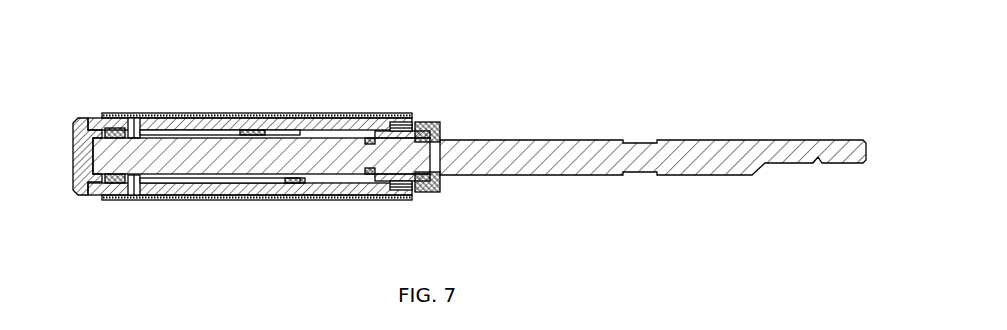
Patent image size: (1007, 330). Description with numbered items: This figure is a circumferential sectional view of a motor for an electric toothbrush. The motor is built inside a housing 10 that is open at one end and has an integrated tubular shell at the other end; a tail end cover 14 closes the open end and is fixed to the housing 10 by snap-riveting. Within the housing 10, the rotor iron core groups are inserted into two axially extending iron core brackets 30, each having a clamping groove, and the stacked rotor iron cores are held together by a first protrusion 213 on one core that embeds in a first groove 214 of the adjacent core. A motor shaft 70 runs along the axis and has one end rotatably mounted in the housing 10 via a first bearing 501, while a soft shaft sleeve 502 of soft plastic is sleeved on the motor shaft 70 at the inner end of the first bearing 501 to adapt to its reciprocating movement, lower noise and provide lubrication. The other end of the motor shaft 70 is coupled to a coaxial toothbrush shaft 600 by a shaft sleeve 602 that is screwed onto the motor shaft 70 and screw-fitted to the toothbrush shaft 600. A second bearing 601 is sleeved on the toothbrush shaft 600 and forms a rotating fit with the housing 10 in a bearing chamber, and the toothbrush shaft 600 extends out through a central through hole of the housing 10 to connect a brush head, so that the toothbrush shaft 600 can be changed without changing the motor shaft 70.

The tail end cover 14 is at (64, 140).
The first bearing 501 is at (108, 126).
The soft shaft sleeve 502 is at (138, 125).
The housing 10 is at (178, 117).
The first groove 214 is at (243, 128).
The first protrusion 213 is at (268, 130).
The motor shaft 70 is at (338, 158).
The shaft sleeve 602 is at (380, 133).
The second bearing 601 is at (430, 127).
The toothbrush shaft 600 is at (514, 150).
The iron core bracket 30 is at (207, 200).